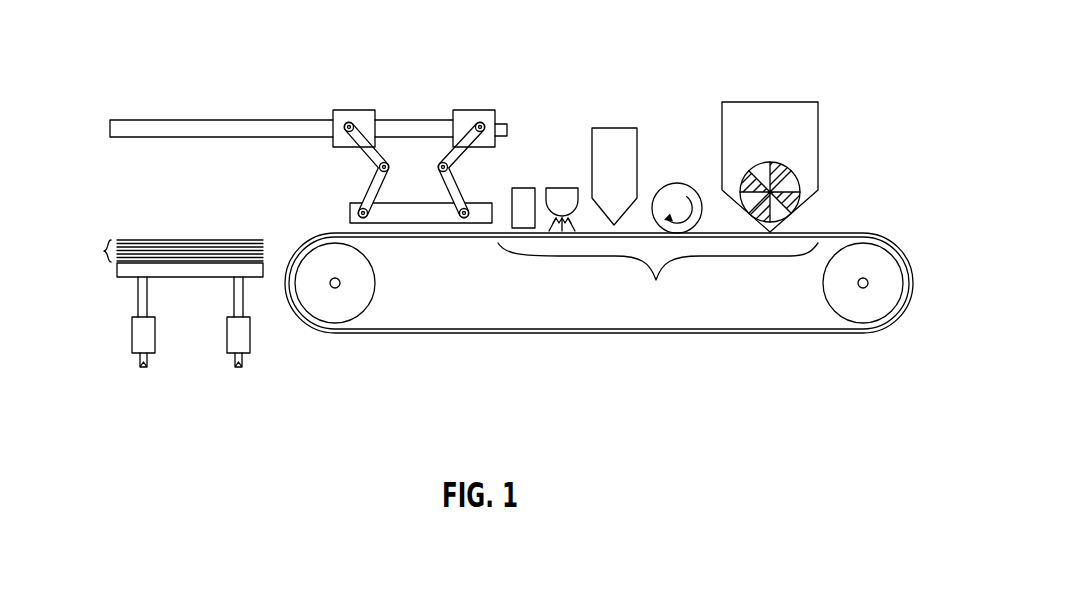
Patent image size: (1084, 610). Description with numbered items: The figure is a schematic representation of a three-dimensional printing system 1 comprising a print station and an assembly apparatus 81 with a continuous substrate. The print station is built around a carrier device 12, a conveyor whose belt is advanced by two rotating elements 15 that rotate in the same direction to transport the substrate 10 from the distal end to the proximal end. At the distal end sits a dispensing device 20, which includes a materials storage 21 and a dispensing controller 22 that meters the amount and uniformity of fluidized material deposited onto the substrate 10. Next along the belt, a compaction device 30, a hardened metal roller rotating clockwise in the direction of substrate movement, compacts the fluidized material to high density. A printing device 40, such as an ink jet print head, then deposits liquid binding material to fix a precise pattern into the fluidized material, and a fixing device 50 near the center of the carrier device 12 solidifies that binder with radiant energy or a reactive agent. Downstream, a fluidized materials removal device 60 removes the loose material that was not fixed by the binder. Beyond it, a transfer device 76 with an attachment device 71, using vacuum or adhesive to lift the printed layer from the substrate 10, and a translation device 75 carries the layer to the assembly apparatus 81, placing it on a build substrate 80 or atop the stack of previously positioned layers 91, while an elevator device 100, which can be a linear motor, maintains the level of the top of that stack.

The processing system 1 is at (656, 281).
The substrate 10 is at (828, 232).
The carrier device 12 is at (623, 289).
The rotating elements 15 is at (362, 318).
The dispensing device 20 is at (804, 136).
The materials storage 21 is at (818, 120).
The dispensing controller 22 is at (798, 178).
The compaction device 30 is at (664, 188).
The printing device 40 is at (625, 140).
The fixing device 50 is at (553, 190).
The fluidized materials removal device 60 is at (522, 190).
The attachment device 71 is at (350, 207).
The translation device 75 is at (241, 140).
The transfer device 76 is at (308, 150).
The build substrate 80 is at (117, 268).
The assembly apparatus 81 is at (150, 303).
The stack of previously positioned layers 91 is at (103, 251).
The elevator device 100 is at (144, 370).